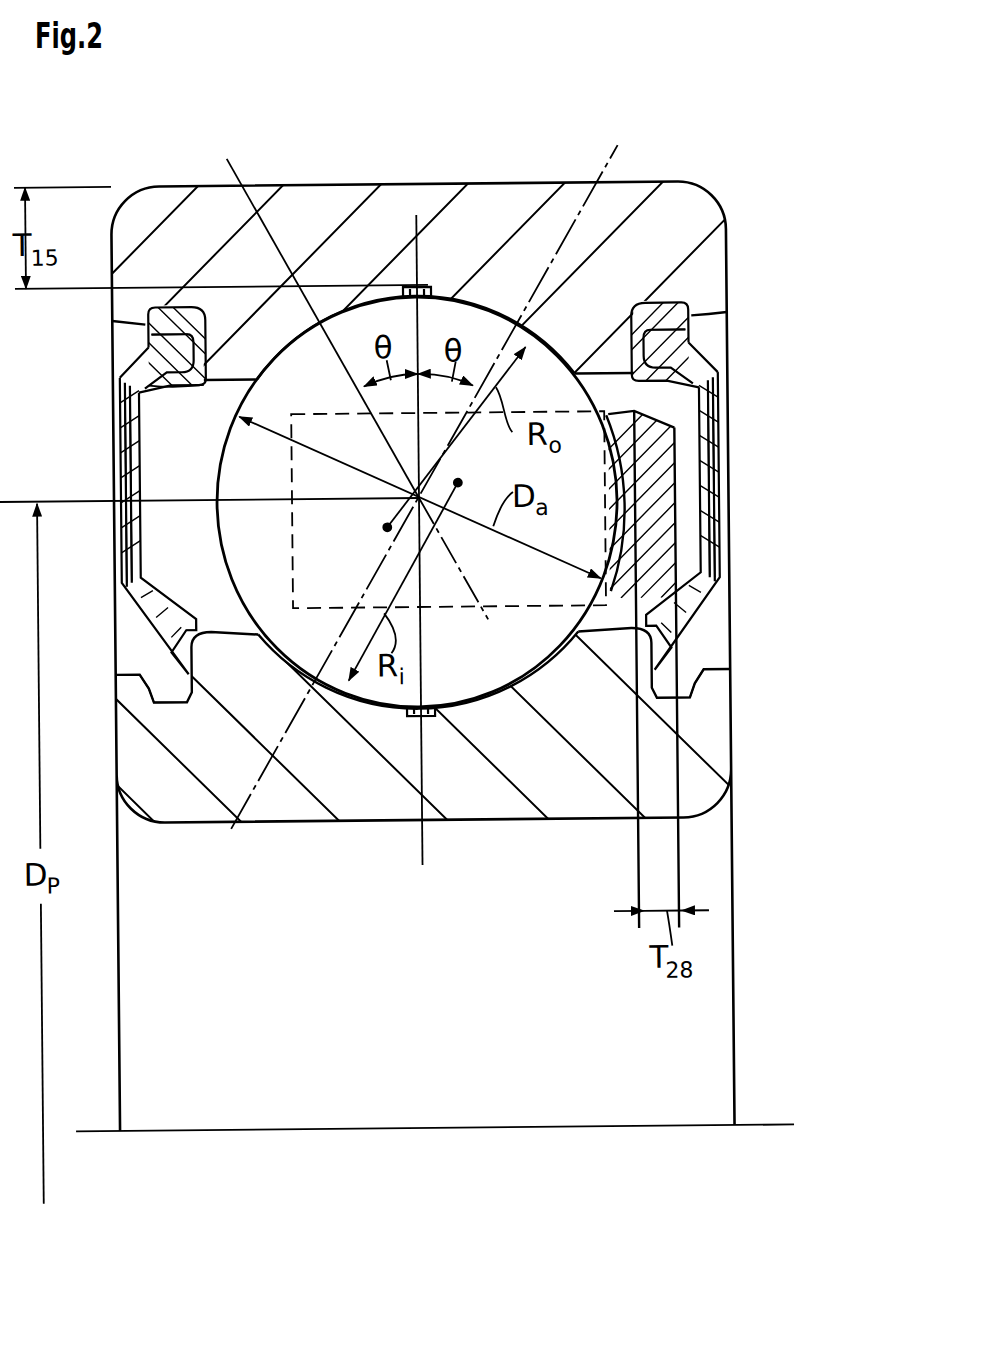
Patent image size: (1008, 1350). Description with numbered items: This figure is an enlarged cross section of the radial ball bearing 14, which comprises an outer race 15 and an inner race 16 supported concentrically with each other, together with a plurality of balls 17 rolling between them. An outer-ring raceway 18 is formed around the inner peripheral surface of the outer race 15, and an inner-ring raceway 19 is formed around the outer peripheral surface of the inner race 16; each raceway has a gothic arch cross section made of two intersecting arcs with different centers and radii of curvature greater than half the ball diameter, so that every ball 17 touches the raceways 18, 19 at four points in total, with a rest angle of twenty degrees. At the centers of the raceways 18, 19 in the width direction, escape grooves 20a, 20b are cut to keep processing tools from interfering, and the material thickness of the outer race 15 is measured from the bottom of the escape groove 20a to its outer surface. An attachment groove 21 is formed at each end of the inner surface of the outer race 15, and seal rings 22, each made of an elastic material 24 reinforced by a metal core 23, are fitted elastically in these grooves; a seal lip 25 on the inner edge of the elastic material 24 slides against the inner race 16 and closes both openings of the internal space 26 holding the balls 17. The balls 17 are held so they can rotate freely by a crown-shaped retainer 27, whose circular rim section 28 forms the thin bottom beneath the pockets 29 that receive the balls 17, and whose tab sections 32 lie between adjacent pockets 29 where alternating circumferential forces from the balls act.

The radial ball bearing 14 is at (551, 182).
The outer race 15 is at (472, 232).
The inner race 16 is at (396, 800).
The ball 17 is at (245, 462).
The outer-ring raceway 18 is at (362, 312).
The inner-ring raceway 19 is at (532, 668).
The escape groove 20a is at (420, 287).
The escape groove 20b is at (440, 718).
The attachment groove 21 is at (147, 326).
The seal ring 22 is at (127, 533).
The metal core 23 is at (130, 585).
The elastic material 24 is at (152, 345).
The seal lip 25 is at (162, 670).
The internal space 26 is at (175, 432).
The retainer 27 is at (677, 607).
The circular rim section 28 is at (663, 507).
The pocket 29 is at (618, 505).
The tab section 32 is at (307, 540).